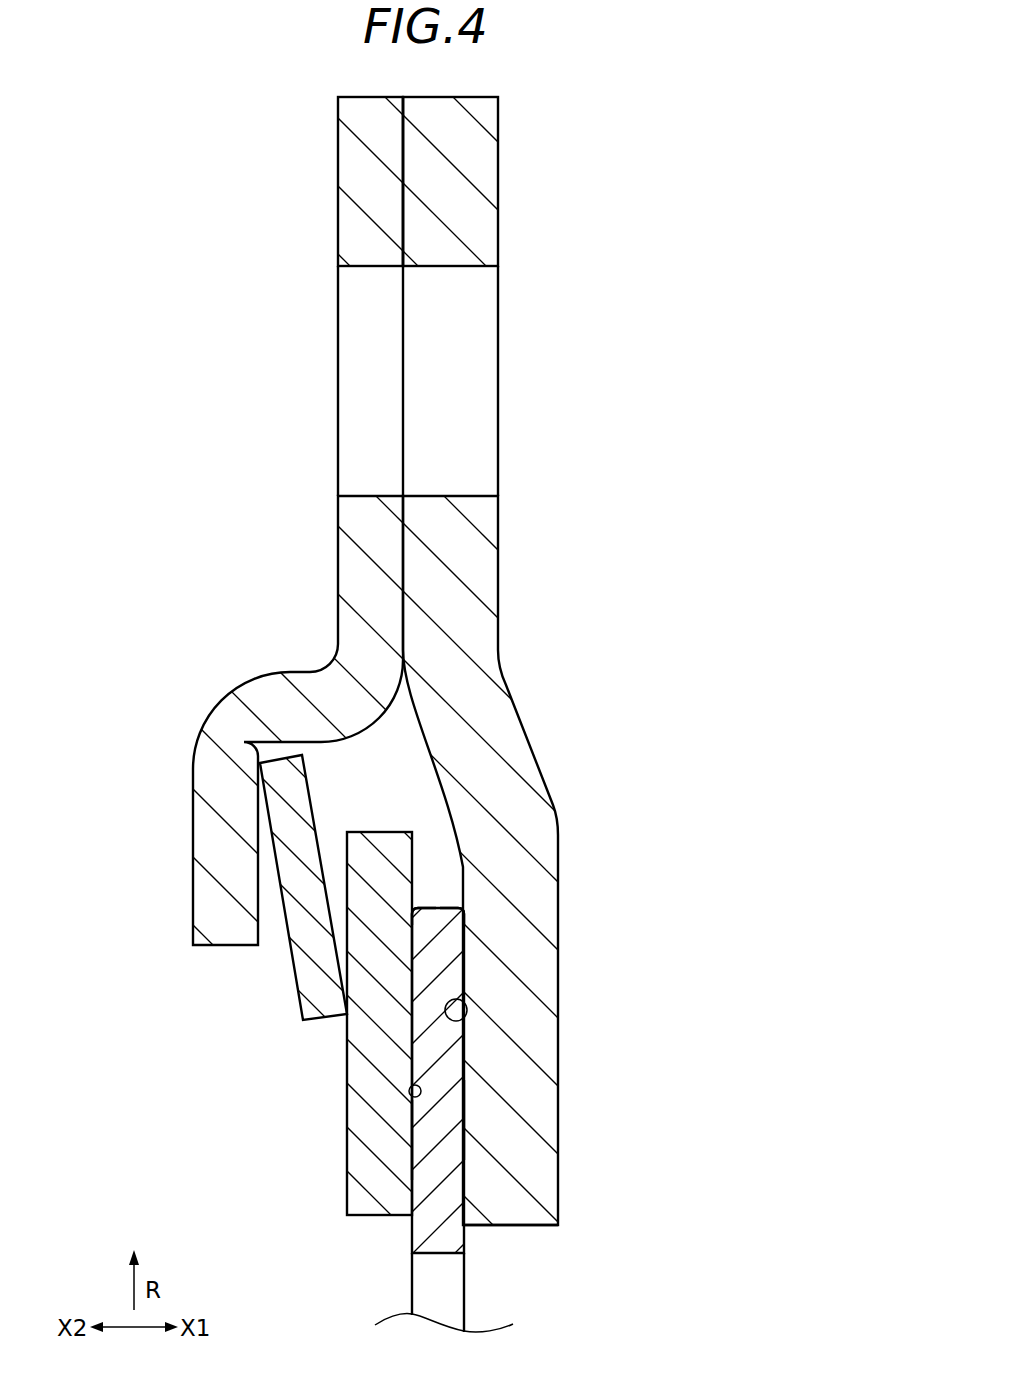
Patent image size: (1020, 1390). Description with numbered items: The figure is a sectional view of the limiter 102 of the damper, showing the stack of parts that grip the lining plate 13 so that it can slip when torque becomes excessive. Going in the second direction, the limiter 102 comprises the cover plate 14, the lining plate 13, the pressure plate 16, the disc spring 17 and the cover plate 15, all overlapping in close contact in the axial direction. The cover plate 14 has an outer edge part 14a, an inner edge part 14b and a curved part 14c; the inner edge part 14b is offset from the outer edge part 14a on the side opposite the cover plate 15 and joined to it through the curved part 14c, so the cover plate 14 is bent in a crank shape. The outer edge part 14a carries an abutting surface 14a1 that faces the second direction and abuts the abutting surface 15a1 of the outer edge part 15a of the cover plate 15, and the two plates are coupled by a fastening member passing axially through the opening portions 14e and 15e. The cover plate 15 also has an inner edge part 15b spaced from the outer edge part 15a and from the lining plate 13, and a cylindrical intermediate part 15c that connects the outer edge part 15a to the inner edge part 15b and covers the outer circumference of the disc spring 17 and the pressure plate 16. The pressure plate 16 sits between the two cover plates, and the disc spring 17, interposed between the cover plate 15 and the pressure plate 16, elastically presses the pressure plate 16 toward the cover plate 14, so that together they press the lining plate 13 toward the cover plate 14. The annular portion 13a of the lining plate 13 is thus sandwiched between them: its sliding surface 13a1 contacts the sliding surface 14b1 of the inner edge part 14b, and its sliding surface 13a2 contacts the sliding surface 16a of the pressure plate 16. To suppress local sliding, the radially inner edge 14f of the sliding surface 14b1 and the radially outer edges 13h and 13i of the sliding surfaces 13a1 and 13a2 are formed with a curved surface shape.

The limiter 102 is at (733, 531).
The lining plate 13 is at (510, 695).
The annular portion 13a is at (443, 1197).
The sliding surface 13a1 is at (467, 1118).
The sliding surface 13a2 is at (412, 1138).
The radially outer edge 13h is at (465, 907).
The radially outer edge 13i is at (413, 904).
The cover plate 14 is at (510, 695).
The outer edge part 14a is at (458, 220).
The abutting surface 14a1 is at (403, 192).
The inner edge part 14b is at (530, 918).
The sliding surface 14b1 is at (466, 1018).
The curved part 14c is at (530, 742).
The opening portion 14e is at (458, 412).
The radially inner edge 14f is at (467, 1222).
The cover plate 15 is at (510, 695).
The outer edge part 15a is at (355, 230).
The abutting surface 15a1 is at (403, 148).
The inner edge part 15b is at (215, 783).
The intermediate part 15c is at (283, 666).
The opening portion 15e is at (370, 367).
The pressure plate 16 is at (347, 1105).
The sliding surface 16a is at (400, 1094).
The disc spring 17 is at (297, 988).